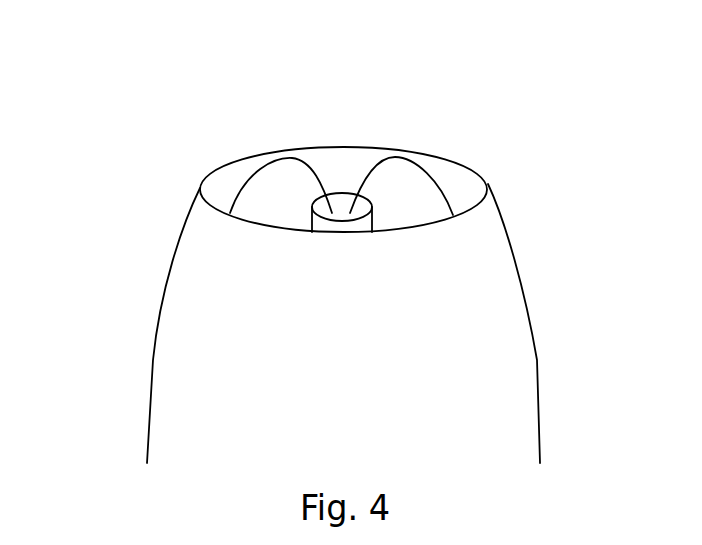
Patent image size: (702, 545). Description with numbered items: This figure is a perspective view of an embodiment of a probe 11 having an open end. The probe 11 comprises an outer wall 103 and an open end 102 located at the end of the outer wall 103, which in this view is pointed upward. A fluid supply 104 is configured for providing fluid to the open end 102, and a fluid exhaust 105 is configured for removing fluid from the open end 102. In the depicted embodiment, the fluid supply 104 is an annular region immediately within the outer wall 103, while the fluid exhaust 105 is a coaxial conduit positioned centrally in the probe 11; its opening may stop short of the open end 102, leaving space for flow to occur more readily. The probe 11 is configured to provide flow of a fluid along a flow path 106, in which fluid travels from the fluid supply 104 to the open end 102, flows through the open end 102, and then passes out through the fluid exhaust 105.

The probe 11 is at (271, 265).
The open end 102 is at (317, 148).
The outer wall 103 is at (185, 373).
The fluid supply 104 is at (220, 185).
The fluid exhaust 105 is at (347, 195).
The flow path 106 is at (433, 183).